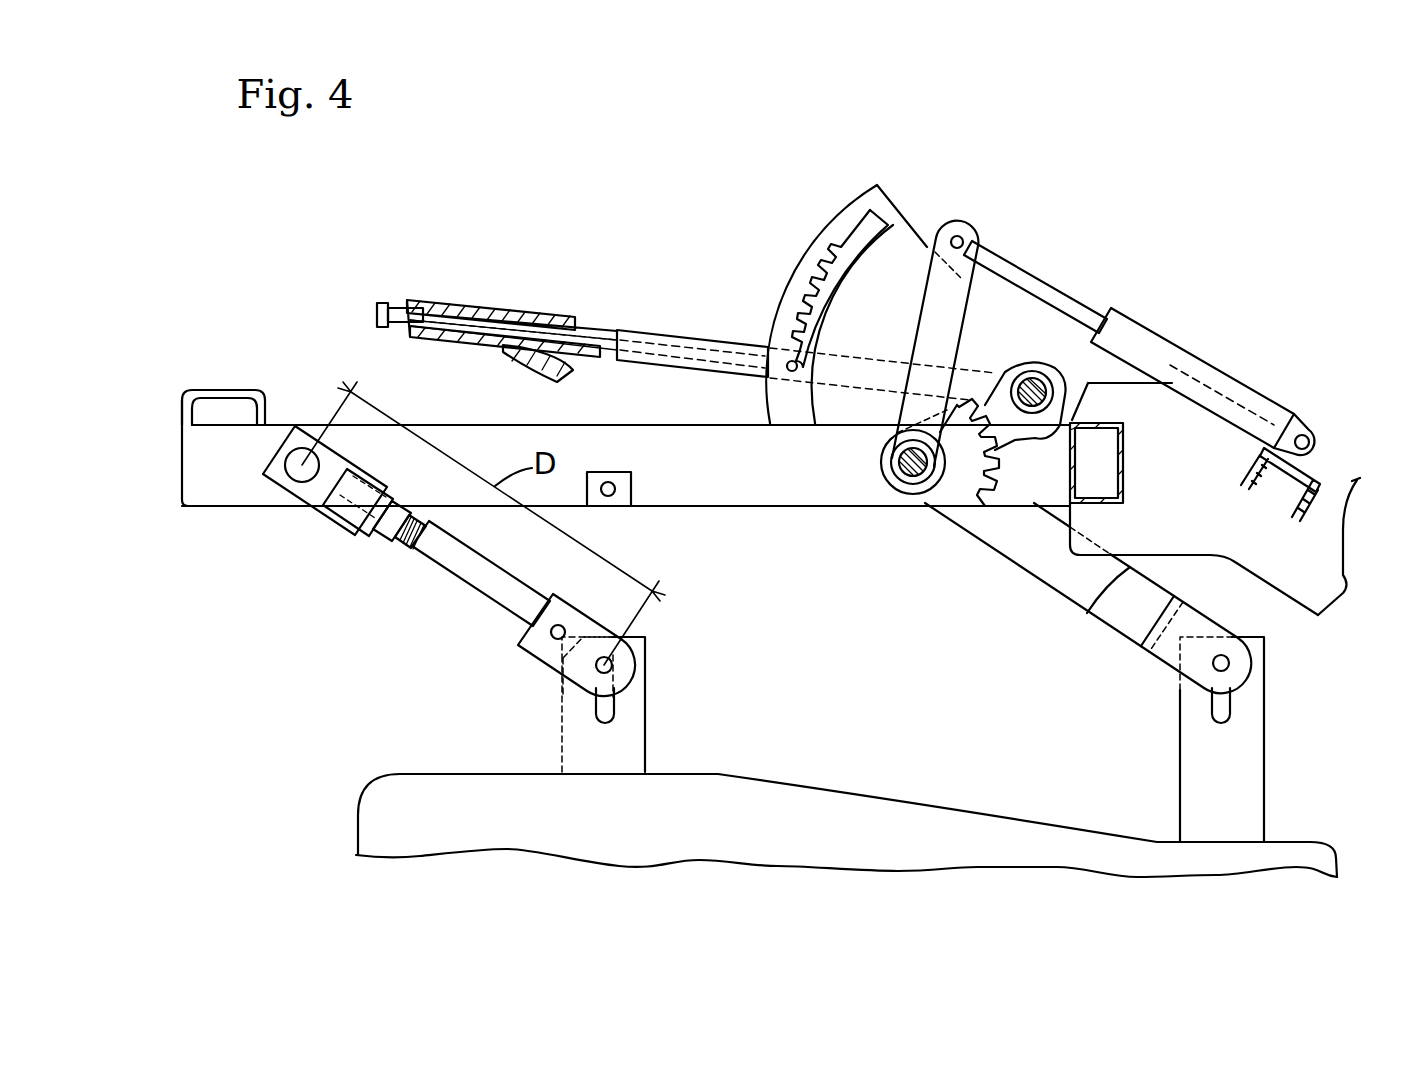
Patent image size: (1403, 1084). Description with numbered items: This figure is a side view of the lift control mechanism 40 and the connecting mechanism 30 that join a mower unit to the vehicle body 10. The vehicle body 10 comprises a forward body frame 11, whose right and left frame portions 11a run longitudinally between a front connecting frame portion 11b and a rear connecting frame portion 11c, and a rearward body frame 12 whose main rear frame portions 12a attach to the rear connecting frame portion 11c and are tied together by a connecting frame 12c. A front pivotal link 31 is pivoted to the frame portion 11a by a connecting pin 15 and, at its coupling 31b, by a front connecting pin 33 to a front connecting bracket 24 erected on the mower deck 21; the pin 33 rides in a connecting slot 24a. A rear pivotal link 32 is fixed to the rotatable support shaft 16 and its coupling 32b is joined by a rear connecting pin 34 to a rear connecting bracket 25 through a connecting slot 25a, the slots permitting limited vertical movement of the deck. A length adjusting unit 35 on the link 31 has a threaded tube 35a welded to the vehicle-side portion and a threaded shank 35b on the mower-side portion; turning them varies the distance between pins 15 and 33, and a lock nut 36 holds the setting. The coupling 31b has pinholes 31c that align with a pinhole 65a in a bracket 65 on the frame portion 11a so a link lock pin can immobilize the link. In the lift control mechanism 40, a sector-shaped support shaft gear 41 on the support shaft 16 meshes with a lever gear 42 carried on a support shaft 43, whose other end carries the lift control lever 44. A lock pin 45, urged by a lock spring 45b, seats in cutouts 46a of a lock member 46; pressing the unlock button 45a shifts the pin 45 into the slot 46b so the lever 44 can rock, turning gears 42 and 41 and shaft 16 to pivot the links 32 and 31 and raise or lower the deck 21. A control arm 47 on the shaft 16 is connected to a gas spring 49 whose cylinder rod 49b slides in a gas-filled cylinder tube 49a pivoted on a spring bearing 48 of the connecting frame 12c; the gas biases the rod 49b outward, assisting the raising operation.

The vehicle body 10 is at (784, 501).
The forward body frame 11 is at (685, 469).
The frame portions 11a is at (700, 506).
The front connecting frame portion 11b is at (222, 388).
The rear connecting frame portion 11c is at (1123, 465).
The rearward body frame 12 is at (1208, 518).
The main rear frame portions 12a is at (1327, 583).
The connecting frame 12c is at (1313, 467).
The connecting pin 15 is at (285, 463).
The rotatable support shaft 16 is at (905, 485).
The mower deck 21 is at (852, 757).
The front connecting brackets 24 is at (646, 704).
The connecting slots 24a is at (612, 703).
The rear connecting brackets 25 is at (1264, 739).
The connecting slots 25a is at (1232, 712).
The lifting link mechanism 30 is at (804, 617).
The front pivotal link 31 is at (523, 619).
The coupling 31b is at (545, 655).
The pinholes 31c is at (556, 625).
The rear pivotal link 32 is at (1088, 629).
The coupling 32b is at (1167, 657).
The front connecting pin 33 is at (613, 663).
The rear connecting pin 34 is at (1230, 660).
The length adjusting unit 35 is at (348, 563).
The threaded tube 35a is at (345, 520).
The threaded shank 35b is at (382, 574).
The lock nut 36 is at (404, 502).
The lift control mechanism 40 is at (836, 333).
The support shaft gear 41 is at (955, 480).
The lever gear 42 is at (995, 395).
The support shaft 43 is at (1035, 385).
The lift control lever 44 is at (640, 330).
The lock pin 45 is at (659, 353).
The unlock button 45a is at (380, 312).
The lock spring 45b is at (465, 305).
The lock member 46 is at (826, 275).
The cutouts 46a is at (832, 255).
The slot 46b is at (835, 295).
The control arm 47 is at (965, 230).
The spring bearing 48 is at (1308, 432).
The gas spring 49 is at (1129, 329).
The cylinder tube 49a is at (1192, 368).
The cylinder rod 49b is at (1068, 303).
The bracket 65 is at (656, 438).
The stopper hole 65a is at (632, 488).